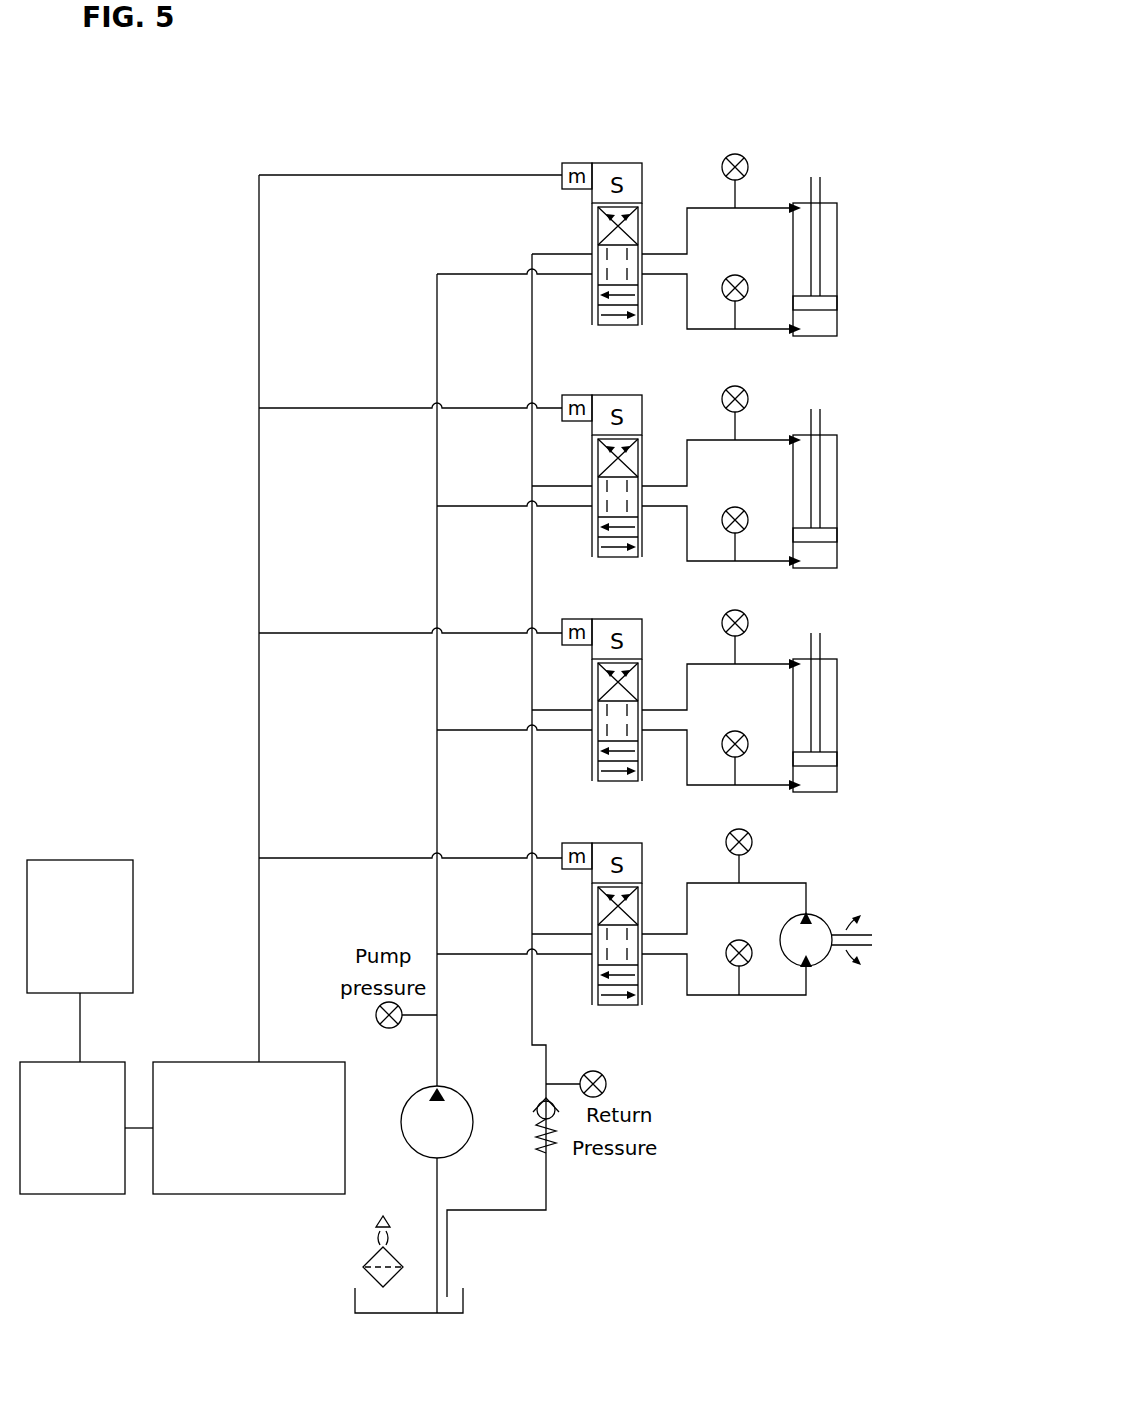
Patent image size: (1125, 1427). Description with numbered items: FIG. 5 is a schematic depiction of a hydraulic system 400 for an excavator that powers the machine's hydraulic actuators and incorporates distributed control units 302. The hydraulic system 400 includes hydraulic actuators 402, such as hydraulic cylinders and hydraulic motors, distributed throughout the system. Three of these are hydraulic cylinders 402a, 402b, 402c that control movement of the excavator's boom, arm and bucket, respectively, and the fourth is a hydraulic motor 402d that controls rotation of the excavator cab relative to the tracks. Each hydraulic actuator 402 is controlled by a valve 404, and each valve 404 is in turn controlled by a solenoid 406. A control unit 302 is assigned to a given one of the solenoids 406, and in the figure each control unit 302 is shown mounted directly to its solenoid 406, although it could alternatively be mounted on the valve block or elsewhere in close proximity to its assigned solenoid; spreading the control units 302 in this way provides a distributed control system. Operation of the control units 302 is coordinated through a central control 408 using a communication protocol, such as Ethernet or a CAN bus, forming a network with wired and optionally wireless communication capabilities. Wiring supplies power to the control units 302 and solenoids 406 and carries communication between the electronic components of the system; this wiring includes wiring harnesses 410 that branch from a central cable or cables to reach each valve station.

The hydraulic system 400 is at (756, 96).
The control unit 302 is at (578, 164).
The hydraulic actuator 402 is at (860, 570).
The hydraulic cylinder 402a is at (840, 760).
The hydraulic cylinder 402b is at (840, 536).
The hydraulic cylinder 402c is at (840, 304).
The hydraulic motor 402d is at (824, 960).
The valve 404 is at (643, 283).
The solenoid 406 is at (643, 185).
The central control 408 is at (97, 1194).
The wiring harness 410 is at (303, 175).